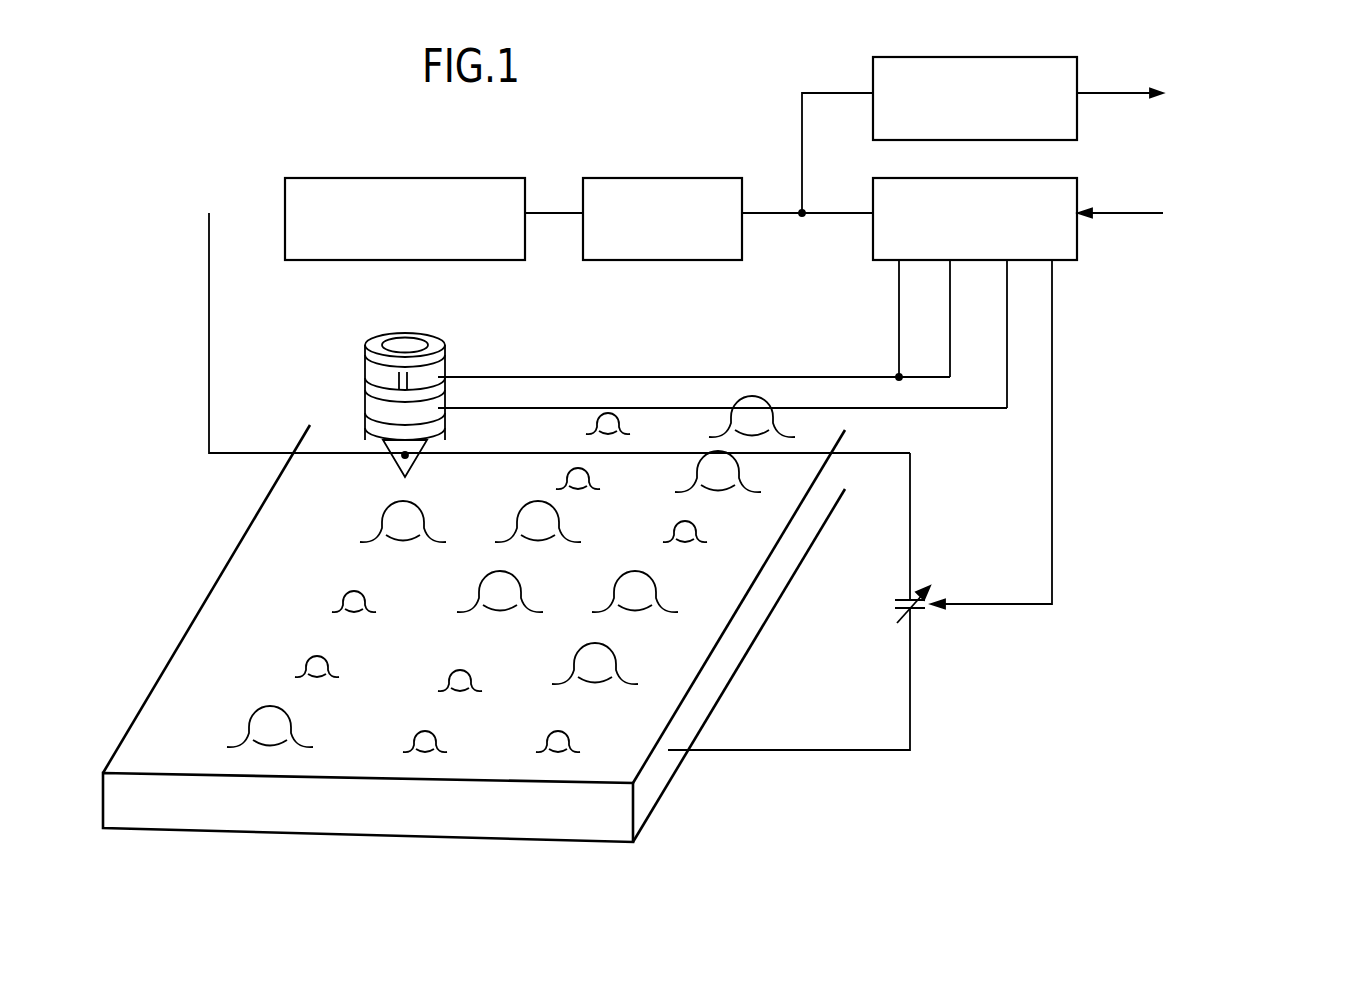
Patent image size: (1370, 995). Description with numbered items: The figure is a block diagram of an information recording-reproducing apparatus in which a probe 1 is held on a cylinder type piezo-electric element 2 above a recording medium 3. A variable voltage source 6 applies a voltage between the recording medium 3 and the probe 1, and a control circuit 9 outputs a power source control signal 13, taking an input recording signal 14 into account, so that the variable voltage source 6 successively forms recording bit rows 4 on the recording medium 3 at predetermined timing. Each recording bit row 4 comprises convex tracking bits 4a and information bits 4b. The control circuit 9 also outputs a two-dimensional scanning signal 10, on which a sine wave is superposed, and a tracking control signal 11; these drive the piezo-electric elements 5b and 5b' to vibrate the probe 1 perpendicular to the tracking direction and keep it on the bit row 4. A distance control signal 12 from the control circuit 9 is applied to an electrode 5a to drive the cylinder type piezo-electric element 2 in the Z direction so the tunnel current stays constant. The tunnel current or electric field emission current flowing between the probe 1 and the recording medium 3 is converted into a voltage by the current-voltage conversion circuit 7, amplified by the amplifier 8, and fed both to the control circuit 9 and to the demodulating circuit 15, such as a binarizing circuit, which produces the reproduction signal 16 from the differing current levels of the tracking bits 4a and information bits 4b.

The probe 1 is at (380, 447).
The cylinder type piezo-electric element 2 is at (393, 342).
The recording medium 3 is at (545, 830).
The recording bit row 4 is at (300, 510).
The tracking bit 4a is at (342, 608).
The information bit 4b is at (366, 518).
The electrode 5a is at (375, 406).
The piezo-electric element 5b is at (385, 351).
The piezo-electric element 5b' is at (678, 350).
The variable voltage source 6 is at (812, 601).
The current-voltage conversion circuit 7 is at (361, 178).
The amplifier 8 is at (608, 178).
The control circuit 9 is at (892, 178).
The two-dimensional scanning signal 10 is at (882, 320).
The tracking control signal 11 is at (931, 318).
The distance control signal 12 is at (987, 334).
The power source control signal 13 is at (991, 434).
The recording signal 14 is at (1191, 199).
The demodulating circuit 15 is at (872, 72).
The reproduction signal 16 is at (1214, 89).